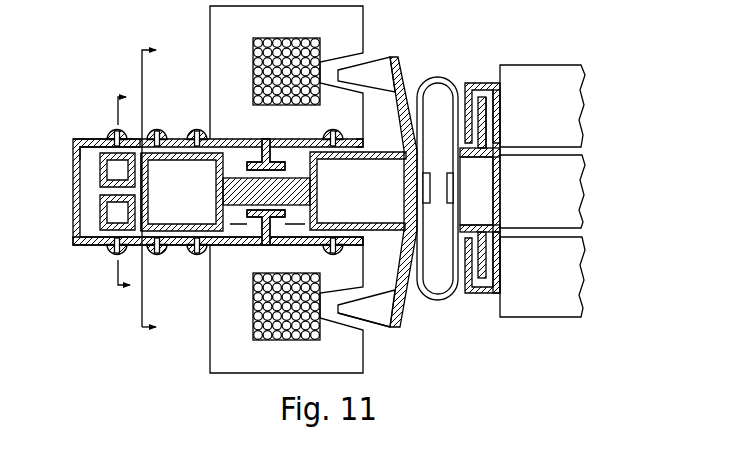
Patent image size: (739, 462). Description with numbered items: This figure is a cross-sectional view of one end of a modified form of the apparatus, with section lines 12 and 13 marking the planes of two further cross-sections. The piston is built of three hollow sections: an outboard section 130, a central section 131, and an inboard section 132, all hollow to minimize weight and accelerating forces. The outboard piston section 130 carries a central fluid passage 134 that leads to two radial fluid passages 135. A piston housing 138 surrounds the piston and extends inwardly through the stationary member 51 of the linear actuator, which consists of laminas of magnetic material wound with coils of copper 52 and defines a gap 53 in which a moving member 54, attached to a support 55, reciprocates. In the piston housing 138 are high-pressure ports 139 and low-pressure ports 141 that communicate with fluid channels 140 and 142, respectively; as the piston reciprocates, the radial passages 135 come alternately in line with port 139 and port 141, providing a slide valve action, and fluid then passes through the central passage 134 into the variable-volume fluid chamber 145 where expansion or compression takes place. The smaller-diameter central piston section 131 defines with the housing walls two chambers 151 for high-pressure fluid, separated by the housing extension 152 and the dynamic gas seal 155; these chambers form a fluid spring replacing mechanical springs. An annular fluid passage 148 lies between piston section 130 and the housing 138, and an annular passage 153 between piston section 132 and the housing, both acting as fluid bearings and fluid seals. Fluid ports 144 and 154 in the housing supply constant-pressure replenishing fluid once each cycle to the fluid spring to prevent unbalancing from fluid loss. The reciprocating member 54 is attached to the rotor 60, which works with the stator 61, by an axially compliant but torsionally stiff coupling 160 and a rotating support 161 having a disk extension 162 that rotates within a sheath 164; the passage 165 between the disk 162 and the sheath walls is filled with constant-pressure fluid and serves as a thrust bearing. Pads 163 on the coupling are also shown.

The section line 12- 12 is at (121, 193).
The section line 13- 13 is at (161, 188).
The stationary member 51 is at (235, 363).
The coils of copper 52 is at (316, 340).
The gap 53 is at (352, 323).
The moving member 54 is at (377, 315).
The support 55 is at (395, 78).
The rotor 60 is at (552, 200).
The stator 61 is at (552, 116).
The outboard piston section 130 is at (200, 201).
The central piston section 131 is at (290, 200).
The inboard piston section 132 is at (384, 201).
The central fluid passage 134 is at (100, 192).
The radial fluid passages 135 is at (143, 150).
The piston housing 138 is at (95, 240).
The high-pressure ports 139 is at (107, 140).
The fluid channel 140 is at (110, 132).
The low-pressure ports 141 is at (165, 132).
The fluid channel 142 is at (157, 130).
The fluid port 144 is at (200, 131).
The fluid chamber 145 is at (87, 160).
The annular fluid passage 148 is at (185, 250).
The chambers 151 is at (242, 222).
The housing extension 152 is at (260, 219).
The annular passage 153 is at (365, 150).
The fluid port 154 is at (333, 132).
The dynamic gas seal 155 is at (265, 147).
The coupling 160 is at (433, 74).
The rotating support 161 is at (478, 160).
The disk extension 162 is at (480, 97).
The pads 163 is at (447, 195).
The sheath 164 is at (500, 88).
The passage 165 is at (488, 117).